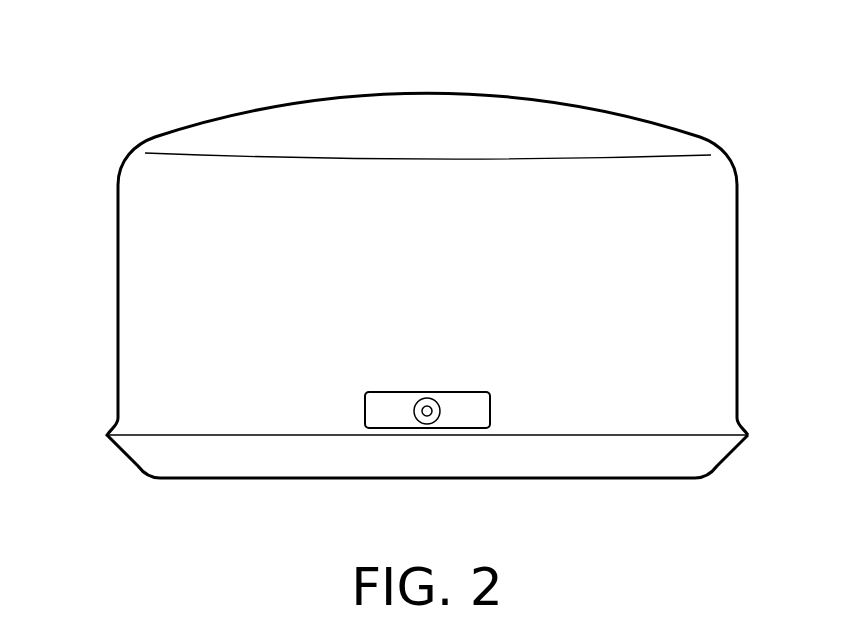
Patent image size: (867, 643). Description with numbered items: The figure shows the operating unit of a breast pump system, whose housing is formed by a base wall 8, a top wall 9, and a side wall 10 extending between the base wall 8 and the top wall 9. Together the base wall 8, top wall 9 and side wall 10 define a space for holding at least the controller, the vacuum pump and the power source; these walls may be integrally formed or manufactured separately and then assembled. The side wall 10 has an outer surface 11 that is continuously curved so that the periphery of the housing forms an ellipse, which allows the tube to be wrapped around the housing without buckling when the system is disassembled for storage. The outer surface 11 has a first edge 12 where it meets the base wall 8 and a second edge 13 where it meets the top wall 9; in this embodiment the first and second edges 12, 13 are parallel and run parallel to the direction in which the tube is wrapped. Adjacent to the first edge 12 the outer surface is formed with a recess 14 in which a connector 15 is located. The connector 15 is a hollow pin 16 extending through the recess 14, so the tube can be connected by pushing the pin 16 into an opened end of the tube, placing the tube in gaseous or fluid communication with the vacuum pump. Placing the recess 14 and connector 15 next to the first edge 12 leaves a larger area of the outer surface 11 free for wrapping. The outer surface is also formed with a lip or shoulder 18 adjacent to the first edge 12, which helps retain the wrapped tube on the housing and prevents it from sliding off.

The base wall 8 is at (258, 479).
The top wall 9 is at (473, 92).
The side wall 10 is at (739, 258).
The outer surface 11 is at (131, 275).
The first edge 12 is at (620, 437).
The second edge 13 is at (620, 155).
The recess 14 is at (474, 421).
The connector 15 is at (433, 415).
The hollow pin 16 is at (428, 413).
The lip 18 is at (744, 430).